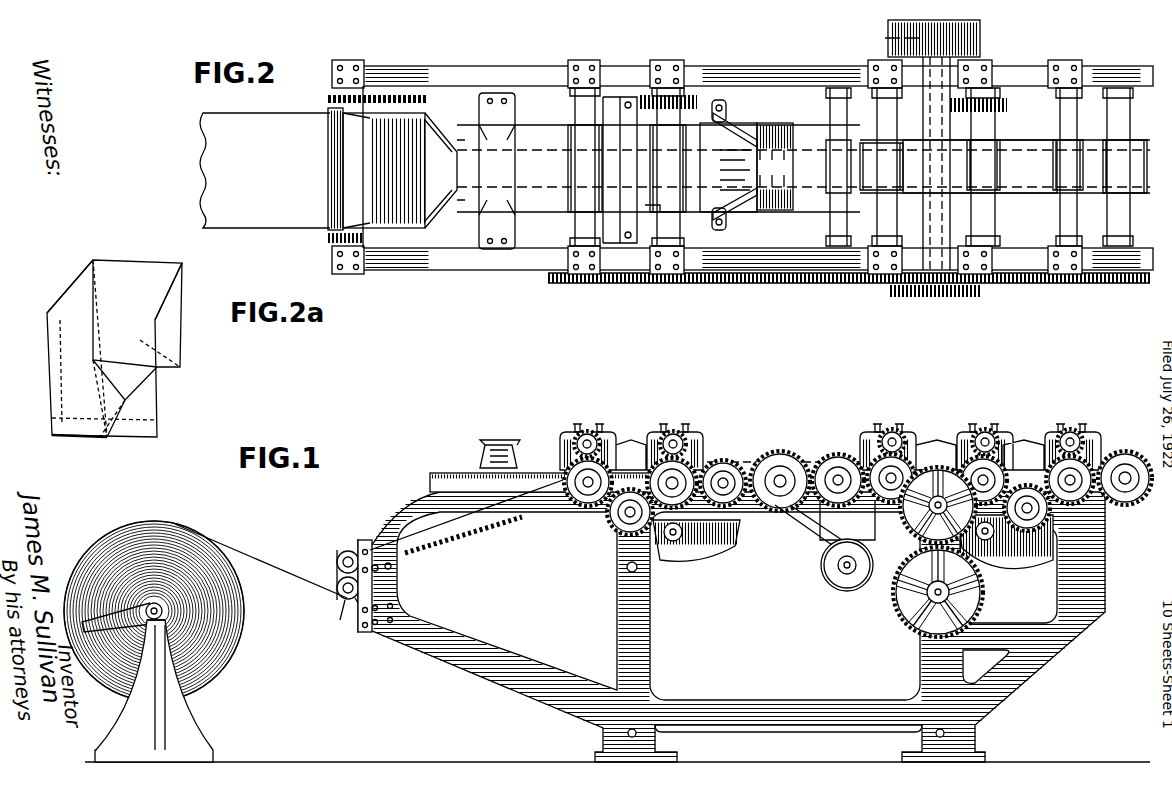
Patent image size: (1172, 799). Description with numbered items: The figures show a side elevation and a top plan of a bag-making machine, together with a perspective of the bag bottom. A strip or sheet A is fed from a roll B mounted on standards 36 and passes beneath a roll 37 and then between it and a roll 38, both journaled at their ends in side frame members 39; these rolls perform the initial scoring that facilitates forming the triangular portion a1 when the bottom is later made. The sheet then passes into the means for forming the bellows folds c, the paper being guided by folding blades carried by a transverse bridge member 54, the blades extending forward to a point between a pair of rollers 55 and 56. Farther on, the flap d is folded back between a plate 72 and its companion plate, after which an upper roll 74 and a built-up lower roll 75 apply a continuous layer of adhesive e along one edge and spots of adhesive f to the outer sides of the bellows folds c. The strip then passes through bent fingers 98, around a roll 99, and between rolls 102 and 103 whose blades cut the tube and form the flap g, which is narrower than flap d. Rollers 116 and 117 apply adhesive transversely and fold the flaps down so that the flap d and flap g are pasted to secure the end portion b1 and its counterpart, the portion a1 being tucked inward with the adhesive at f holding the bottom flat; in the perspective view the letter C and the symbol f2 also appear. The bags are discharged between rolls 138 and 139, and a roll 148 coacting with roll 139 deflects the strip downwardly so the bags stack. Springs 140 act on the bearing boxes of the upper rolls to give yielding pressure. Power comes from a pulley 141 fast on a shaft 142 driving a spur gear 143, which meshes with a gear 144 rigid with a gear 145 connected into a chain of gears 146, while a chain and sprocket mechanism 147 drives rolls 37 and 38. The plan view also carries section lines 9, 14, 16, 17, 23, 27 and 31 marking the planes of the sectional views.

In FIG. 2, the strip or sheet A is at (265, 170).
In FIG. 1, the strip or sheet A is at (245, 556).
In FIG. 1, the roll B is at (160, 540).
In FIG. 2, the cutting block C is at (722, 196).
In FIG. 2, the line 9 is at (298, 234).
In FIG. 2, the line 14 is at (557, 184).
In FIG. 2, the line 16— 16 is at (557, 162).
In FIG. 2, the line 17 is at (683, 306).
In FIG. 2, the section line 23 is at (692, 237).
In FIG. 2, the section line 27 is at (839, 164).
In FIG. 2, the section line 31 is at (878, 205).
In FIG. 2, the standards 36 is at (1115, 169).
In FIG. 1, the standards 36 is at (182, 718).
In FIG. 1, the roll 37 is at (345, 602).
In FIG. 1, the roll 38 is at (336, 558).
In FIG. 2, the side frame members 39 is at (398, 272).
In FIG. 1, the side frame members 39 is at (470, 636).
In FIG. 2, the transverse bridge member 54 is at (497, 171).
In FIG. 2, the roller 55 is at (574, 132).
In FIG. 1, the roller 55 is at (598, 436).
In FIG. 1, the roller 56 is at (586, 498).
In FIG. 2, the plate 72 is at (620, 165).
In FIG. 2, the upper roll 74 is at (673, 160).
In FIG. 1, the upper roll 74 is at (682, 440).
In FIG. 2, the lower roll 75 is at (648, 207).
In FIG. 1, the lower roll 75 is at (676, 487).
In FIG. 2, the bent fingers 98 is at (790, 150).
In FIG. 2, the roll 99 is at (826, 173).
In FIG. 1, the roll 99 is at (853, 583).
In FIG. 2, the roll 102 is at (870, 150).
In FIG. 1, the roll 102 is at (898, 434).
In FIG. 1, the roll 103 is at (900, 462).
In FIG. 2, the roller 116 is at (990, 150).
In FIG. 1, the roller 116 is at (992, 436).
In FIG. 1, the roller 117 is at (998, 462).
In FIG. 2, the roll 138 is at (1055, 166).
In FIG. 1, the roll 138 is at (1070, 430).
In FIG. 1, the roll 139 is at (1076, 494).
In FIG. 1, the springs 140 is at (680, 433).
In FIG. 2, the pulley 141 is at (983, 48).
In FIG. 2, the shaft 142 is at (888, 40).
In FIG. 2, the spur gear 143 is at (913, 298).
In FIG. 1, the gear 144 is at (908, 524).
In FIG. 1, the gear 145 is at (940, 467).
In FIG. 2, the chain of gears 146 is at (808, 290).
In FIG. 1, the chain of gears 146 is at (817, 452).
In FIG. 2, the chain and sprocket mechanism 147 is at (420, 99).
In FIG. 1, the chain and sprocket mechanism 147 is at (460, 540).
In FIG. 2, the roll 148 is at (1136, 140).
In FIG. 1, the roll 148 is at (1126, 455).
In FIG. 2a, the bellows folds c is at (145, 278).
In FIG. 2a, the triangular portion a1 is at (112, 372).
In FIG. 2a, the adhesive spots f is at (165, 365).
In FIG. 2a, the layer of adhesive e is at (96, 410).
In FIG. 2a, the end portion b1 is at (110, 414).
In FIG. 2a, the flap d is at (73, 440).
In FIG. 2a, the flap g is at (92, 440).
In FIG. 2a, the fold line f2 is at (140, 440).